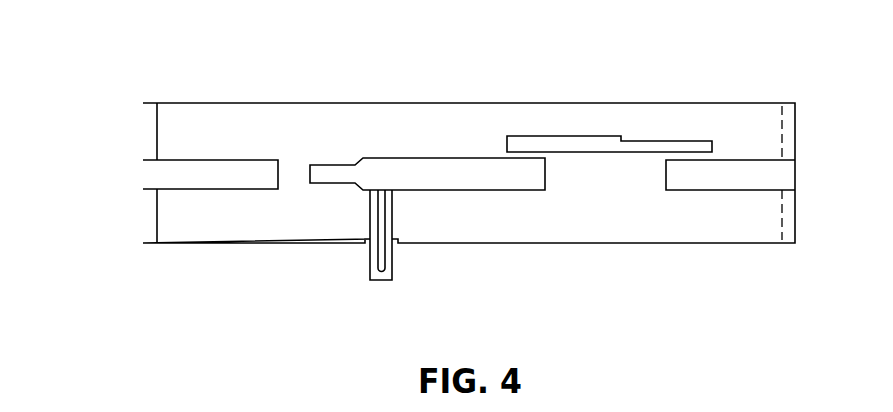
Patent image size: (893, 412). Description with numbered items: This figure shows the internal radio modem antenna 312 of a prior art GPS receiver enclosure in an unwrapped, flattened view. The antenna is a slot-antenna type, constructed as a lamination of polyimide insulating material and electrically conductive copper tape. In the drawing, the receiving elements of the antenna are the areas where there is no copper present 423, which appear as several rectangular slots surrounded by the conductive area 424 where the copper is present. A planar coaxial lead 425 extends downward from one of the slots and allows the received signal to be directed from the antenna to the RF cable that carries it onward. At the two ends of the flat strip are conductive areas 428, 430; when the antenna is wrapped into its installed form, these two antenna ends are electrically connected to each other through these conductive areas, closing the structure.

The internal radio modem antenna 312 is at (738, 103).
The areas where no copper is present 423 is at (230, 168).
The conductive area 424 is at (342, 123).
The planar coaxial lead 425 is at (392, 271).
The conductive area 428 is at (145, 133).
The conductive area 430 is at (792, 146).